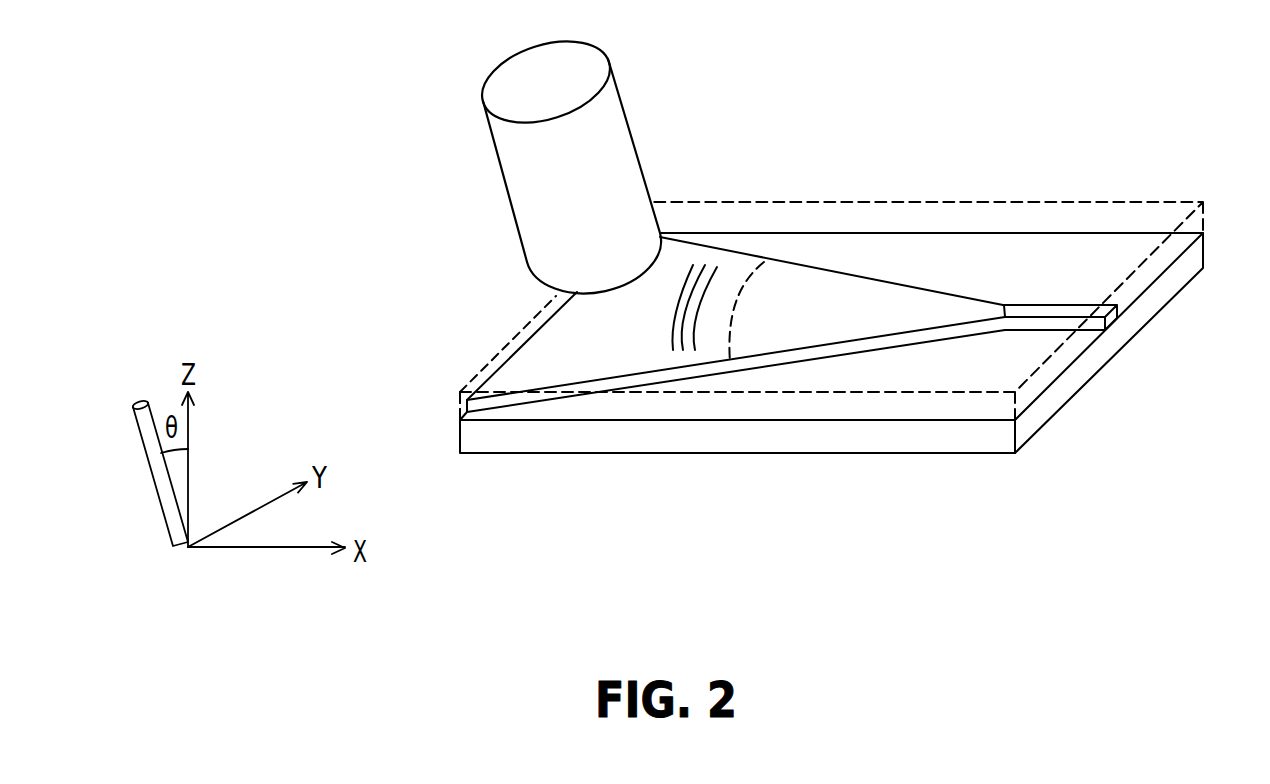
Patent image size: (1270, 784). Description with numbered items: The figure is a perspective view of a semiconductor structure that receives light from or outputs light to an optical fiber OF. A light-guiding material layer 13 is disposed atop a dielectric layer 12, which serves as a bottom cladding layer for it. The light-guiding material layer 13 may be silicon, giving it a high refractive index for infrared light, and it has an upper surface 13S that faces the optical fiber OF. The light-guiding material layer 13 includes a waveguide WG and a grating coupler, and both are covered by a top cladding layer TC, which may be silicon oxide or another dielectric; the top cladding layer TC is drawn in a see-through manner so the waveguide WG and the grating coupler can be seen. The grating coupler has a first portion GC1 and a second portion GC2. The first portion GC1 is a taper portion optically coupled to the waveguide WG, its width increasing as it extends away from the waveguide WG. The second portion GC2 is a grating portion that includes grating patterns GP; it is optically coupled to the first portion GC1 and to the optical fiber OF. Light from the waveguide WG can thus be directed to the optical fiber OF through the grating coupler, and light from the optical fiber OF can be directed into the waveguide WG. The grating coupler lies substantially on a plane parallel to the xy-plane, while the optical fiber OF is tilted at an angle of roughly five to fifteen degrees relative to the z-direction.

The dielectric layer 12 is at (480, 435).
The light-guiding material layer 13 is at (478, 405).
The upper surface 13S is at (555, 336).
The top cladding layer TC is at (470, 385).
The waveguide WG is at (1052, 308).
The first portion GC1 is at (888, 303).
The second portion GC2 is at (728, 272).
The grating patterns GP is at (697, 322).
The optical fiber OF is at (603, 120).